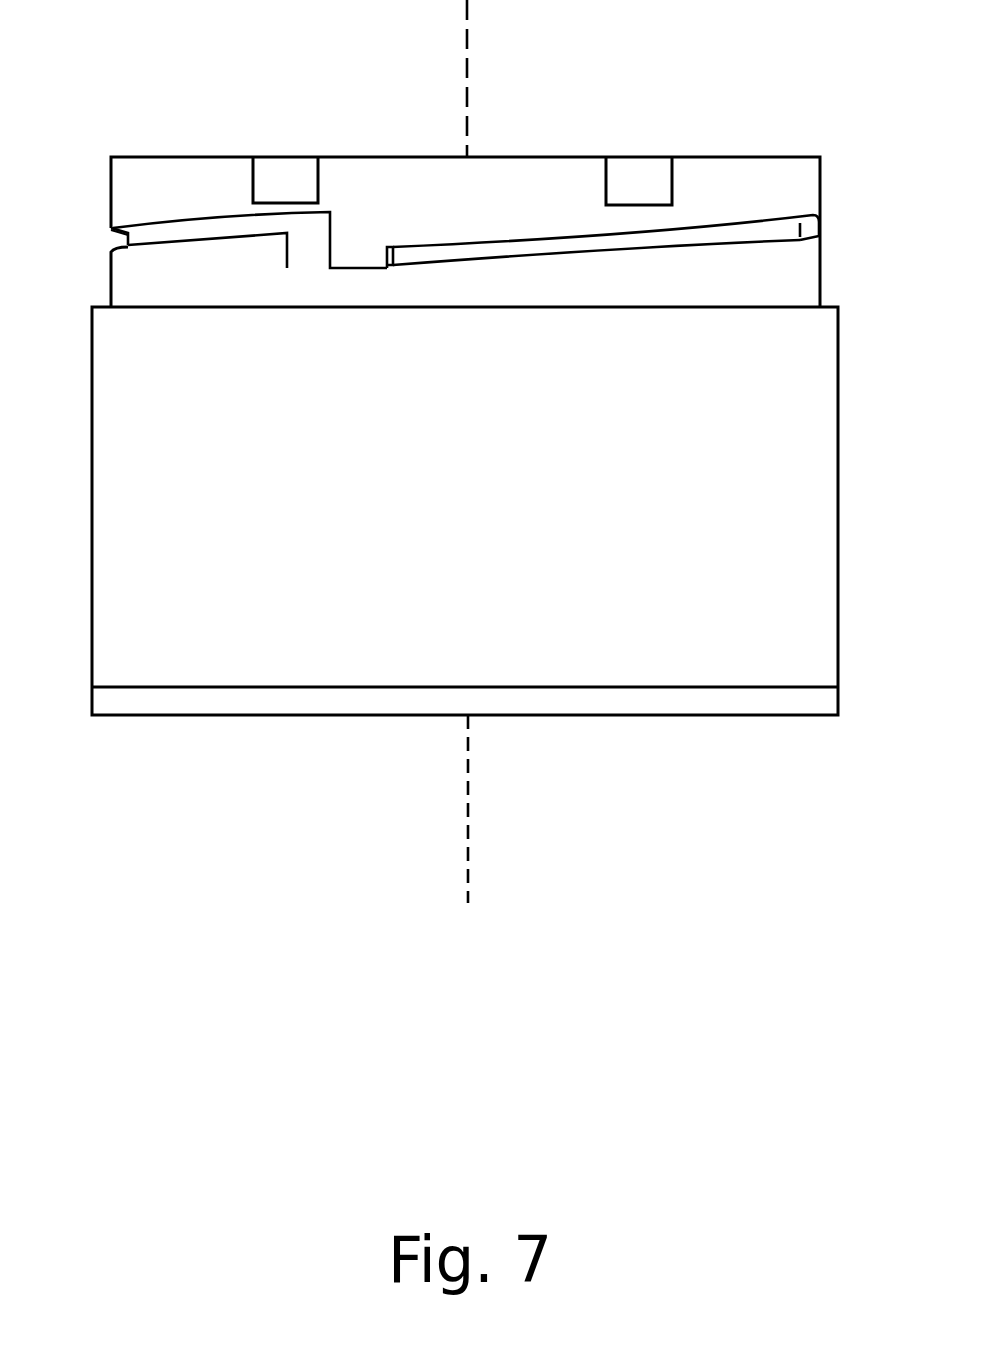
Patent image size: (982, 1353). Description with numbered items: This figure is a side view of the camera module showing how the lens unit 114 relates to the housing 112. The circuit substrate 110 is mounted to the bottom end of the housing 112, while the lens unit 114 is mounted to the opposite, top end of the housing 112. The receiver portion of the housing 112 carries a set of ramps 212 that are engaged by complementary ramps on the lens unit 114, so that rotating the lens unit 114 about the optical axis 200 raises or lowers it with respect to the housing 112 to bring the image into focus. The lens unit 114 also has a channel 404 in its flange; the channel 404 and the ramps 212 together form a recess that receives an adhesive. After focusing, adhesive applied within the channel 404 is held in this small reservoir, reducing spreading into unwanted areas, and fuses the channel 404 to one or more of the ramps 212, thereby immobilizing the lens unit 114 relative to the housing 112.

The optical axis 200 is at (467, 107).
The housing 112 is at (778, 540).
The circuit substrate 110 is at (247, 703).
The lens unit 114 is at (718, 178).
The ramps 212 is at (262, 256).
The channel 404 is at (110, 243).